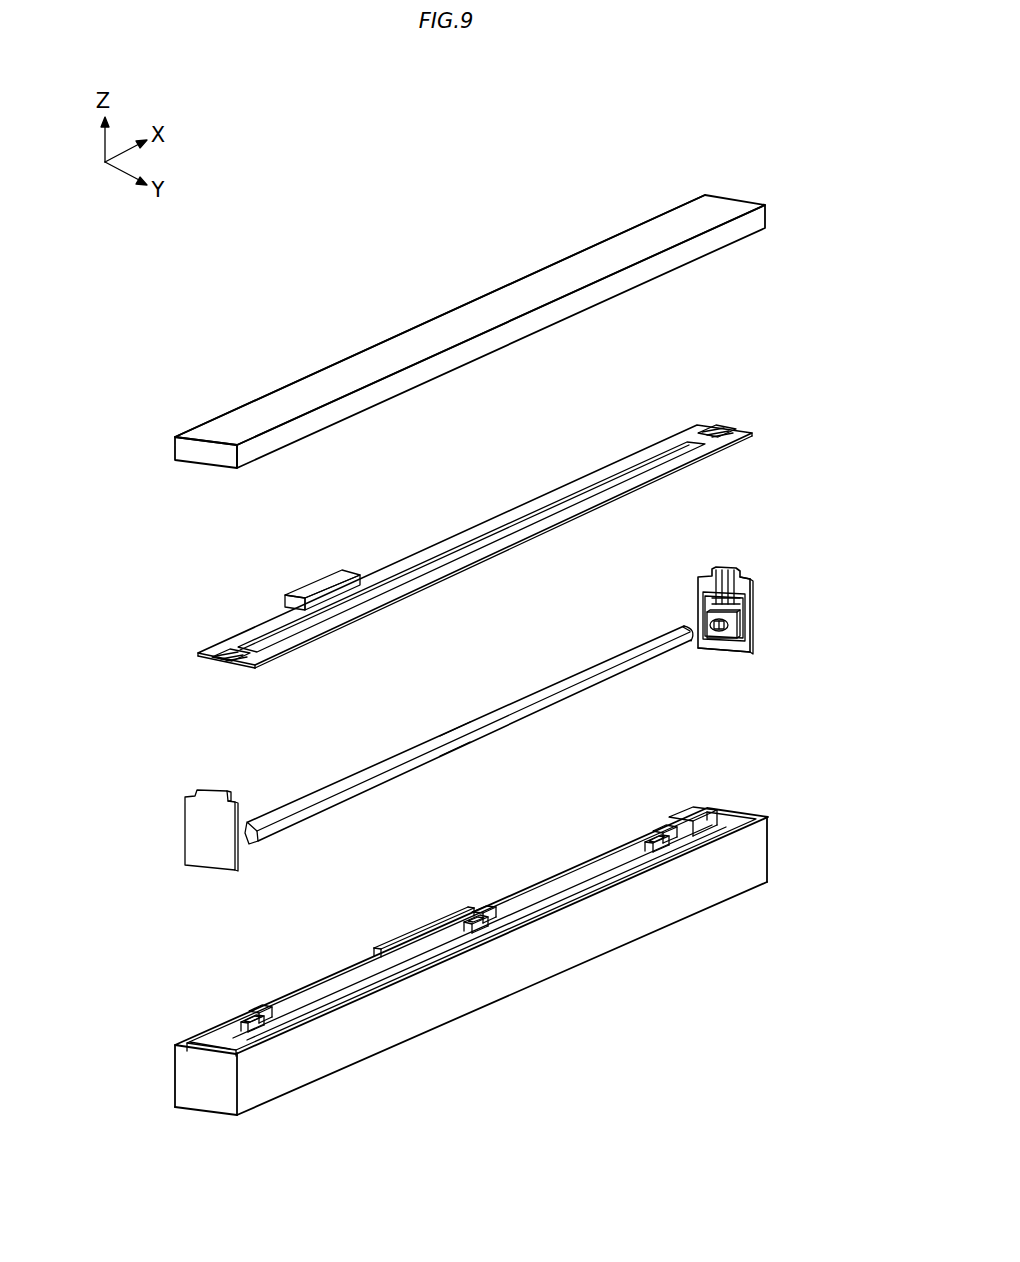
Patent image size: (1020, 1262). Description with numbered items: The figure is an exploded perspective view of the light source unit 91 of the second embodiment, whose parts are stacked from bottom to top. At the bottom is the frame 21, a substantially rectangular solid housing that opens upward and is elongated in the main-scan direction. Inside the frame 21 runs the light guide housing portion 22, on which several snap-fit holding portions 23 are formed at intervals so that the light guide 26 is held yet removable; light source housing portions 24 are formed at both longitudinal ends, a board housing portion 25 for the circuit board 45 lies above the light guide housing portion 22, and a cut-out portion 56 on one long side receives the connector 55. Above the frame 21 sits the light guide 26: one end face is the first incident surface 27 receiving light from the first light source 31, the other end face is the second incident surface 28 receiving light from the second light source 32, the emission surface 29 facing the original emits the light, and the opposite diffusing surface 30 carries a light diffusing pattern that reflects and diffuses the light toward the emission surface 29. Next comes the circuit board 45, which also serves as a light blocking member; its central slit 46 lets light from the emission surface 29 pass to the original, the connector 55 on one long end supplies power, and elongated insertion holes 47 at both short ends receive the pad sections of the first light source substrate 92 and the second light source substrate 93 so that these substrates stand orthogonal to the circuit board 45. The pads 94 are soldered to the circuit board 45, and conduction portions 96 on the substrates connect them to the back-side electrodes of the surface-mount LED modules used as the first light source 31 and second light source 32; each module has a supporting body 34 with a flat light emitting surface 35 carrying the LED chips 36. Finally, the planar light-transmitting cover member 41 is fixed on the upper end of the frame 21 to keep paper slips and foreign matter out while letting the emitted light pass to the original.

The frame 21 is at (453, 931).
The light guide housing portion 22 is at (477, 940).
The snap-fit holding portions 23 is at (250, 1020).
The light source housing portions 24 is at (728, 818).
The board housing portion 25 is at (588, 876).
The light guide 26 is at (469, 709).
The first incident surface 27 is at (692, 627).
The second incident surface 28 is at (249, 822).
The emission surface 29 is at (463, 720).
The diffusing surface 30 is at (453, 742).
The first light source 31 is at (770, 613).
The second light source 32 is at (176, 837).
The supporting body 34 is at (763, 657).
The light emitting surface 35 is at (730, 639).
The LED chips 36 is at (710, 622).
The cover member 41 is at (215, 420).
The circuit board 45 is at (489, 533).
The slit 46 is at (483, 536).
The insertion holes 47 is at (717, 409).
The connector 55 is at (313, 580).
The cut-out portion 56 is at (345, 965).
The light source unit 91 is at (470, 331).
The first light source substrate 92 is at (712, 650).
The second light source substrate 93 is at (208, 865).
The pads 94 is at (720, 567).
The conduction portions 96 is at (744, 588).